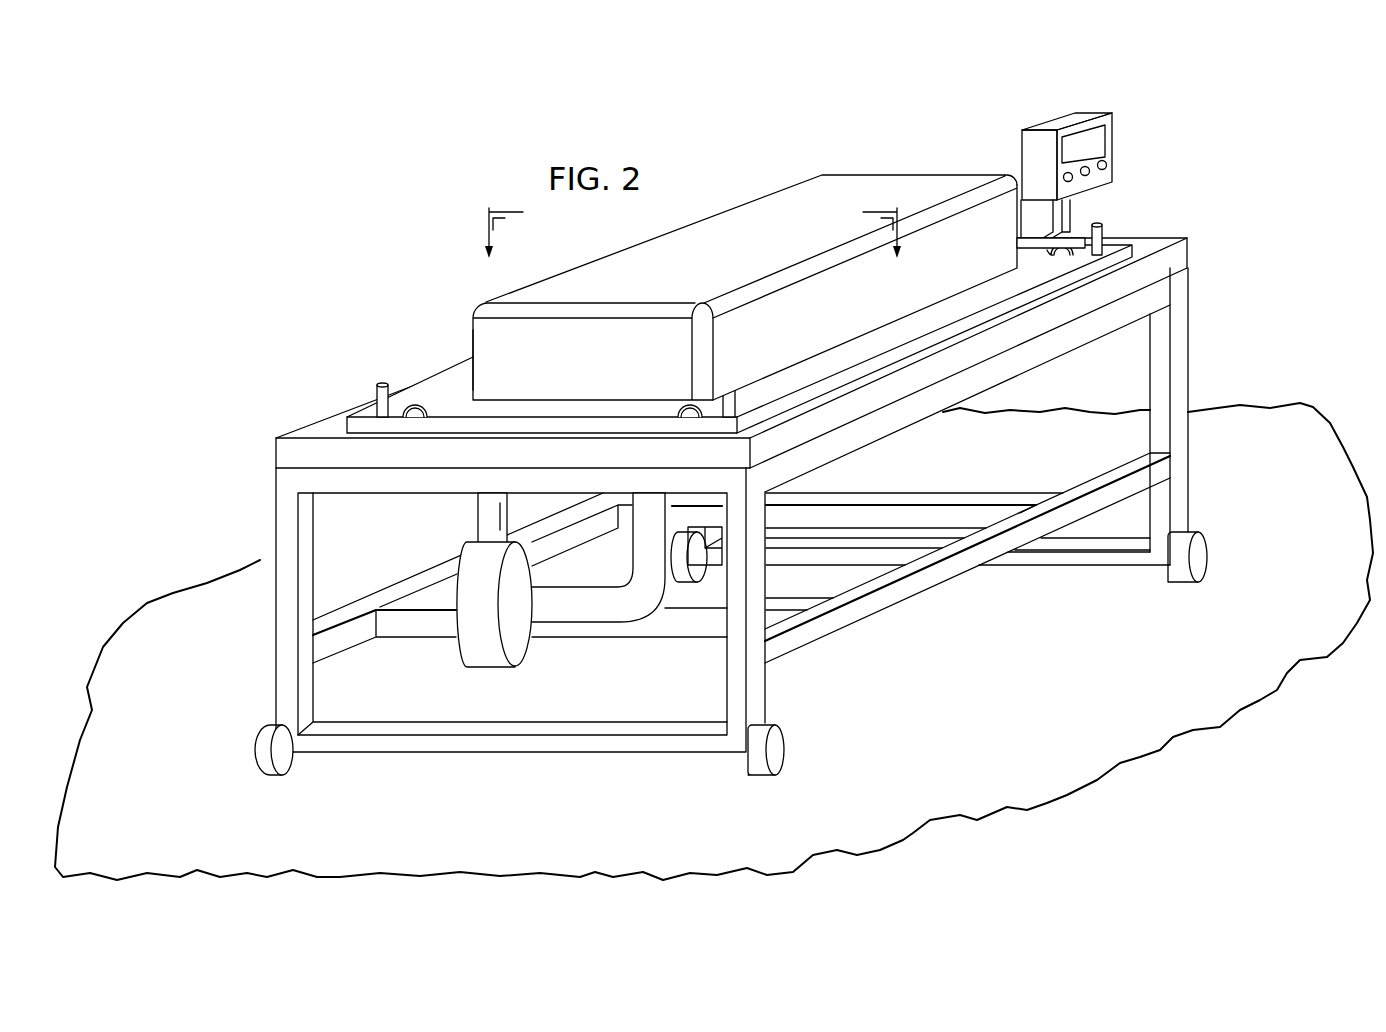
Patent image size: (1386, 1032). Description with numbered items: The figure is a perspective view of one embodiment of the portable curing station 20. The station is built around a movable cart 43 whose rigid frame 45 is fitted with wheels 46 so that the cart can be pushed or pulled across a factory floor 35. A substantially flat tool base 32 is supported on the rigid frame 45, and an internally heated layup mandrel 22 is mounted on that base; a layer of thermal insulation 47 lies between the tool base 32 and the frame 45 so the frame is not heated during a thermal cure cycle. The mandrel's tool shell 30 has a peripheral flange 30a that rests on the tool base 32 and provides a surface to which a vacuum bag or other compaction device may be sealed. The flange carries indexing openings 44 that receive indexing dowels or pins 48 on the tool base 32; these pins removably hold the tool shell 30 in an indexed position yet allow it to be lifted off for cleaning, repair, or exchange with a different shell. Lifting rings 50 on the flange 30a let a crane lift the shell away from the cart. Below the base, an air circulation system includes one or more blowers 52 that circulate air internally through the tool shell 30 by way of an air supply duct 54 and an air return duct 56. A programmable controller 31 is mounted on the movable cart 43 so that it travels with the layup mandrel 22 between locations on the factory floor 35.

The portable curing station 20 is at (628, 119).
The internally heated layup mandrel 22 is at (731, 200).
The tool shell 30 is at (700, 261).
The peripheral flange 30a is at (462, 378).
The programmable controller 31 is at (1088, 118).
The tool base 32 is at (988, 298).
The factory floor 35 is at (1303, 386).
The movable cart 43 is at (266, 617).
The indexing openings 44 is at (370, 412).
The rigid frame 45 is at (1185, 352).
The wheels 46 is at (254, 749).
The thermal insulation 47 is at (277, 463).
The indexing pins 48 is at (383, 383).
The lifting rings 50 is at (408, 403).
The blowers 52 is at (497, 668).
The air supply duct 54 is at (478, 518).
The air return duct 56 is at (566, 624).